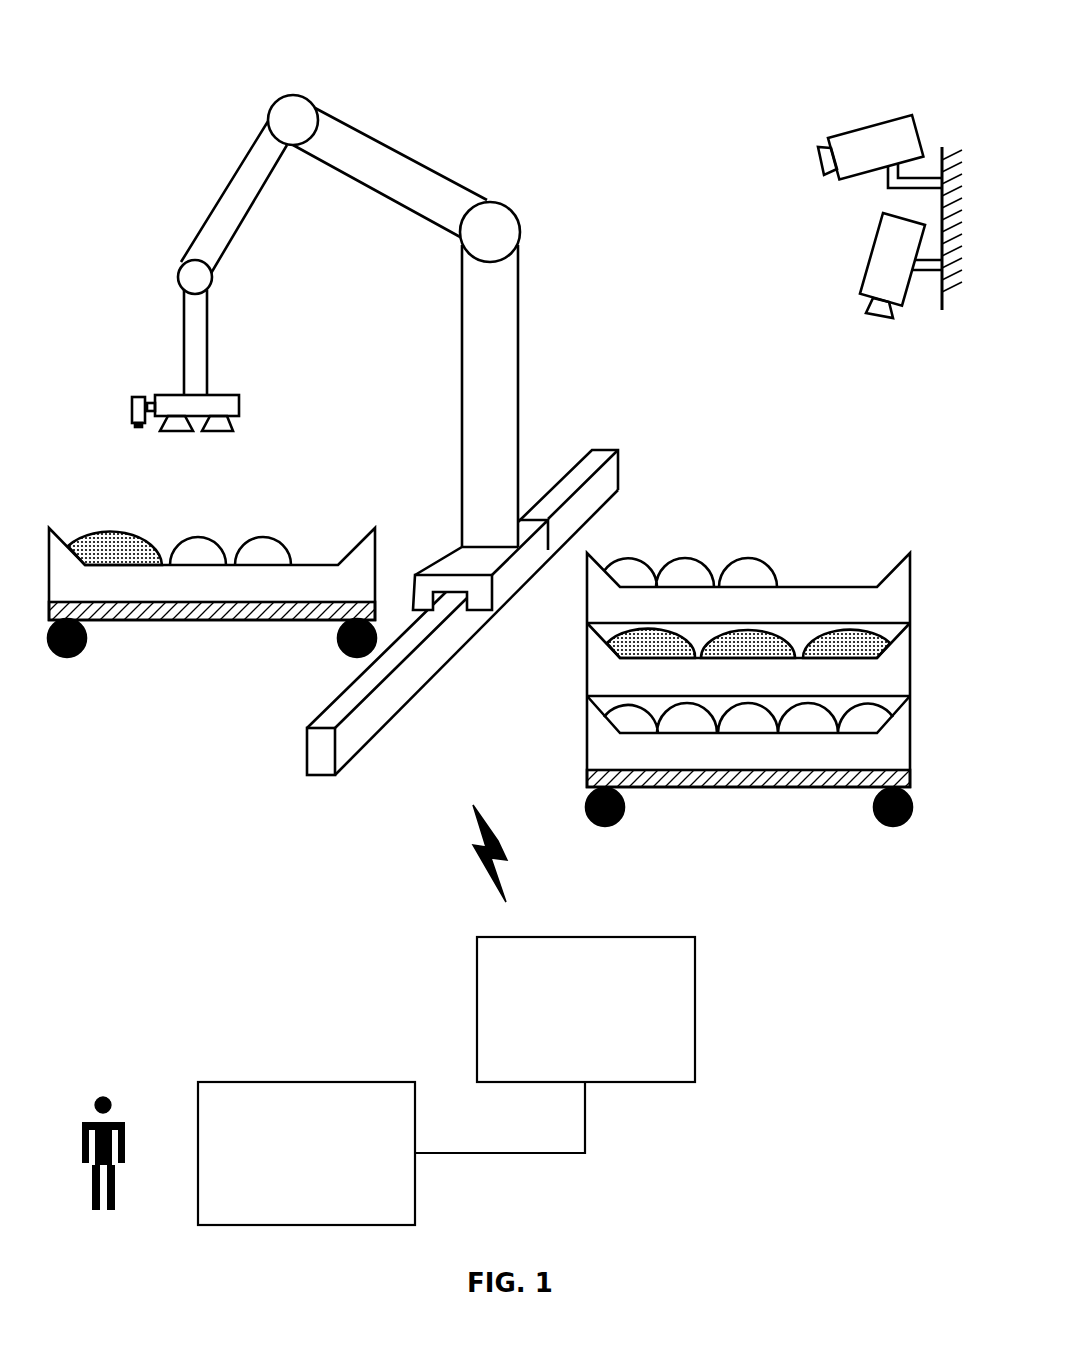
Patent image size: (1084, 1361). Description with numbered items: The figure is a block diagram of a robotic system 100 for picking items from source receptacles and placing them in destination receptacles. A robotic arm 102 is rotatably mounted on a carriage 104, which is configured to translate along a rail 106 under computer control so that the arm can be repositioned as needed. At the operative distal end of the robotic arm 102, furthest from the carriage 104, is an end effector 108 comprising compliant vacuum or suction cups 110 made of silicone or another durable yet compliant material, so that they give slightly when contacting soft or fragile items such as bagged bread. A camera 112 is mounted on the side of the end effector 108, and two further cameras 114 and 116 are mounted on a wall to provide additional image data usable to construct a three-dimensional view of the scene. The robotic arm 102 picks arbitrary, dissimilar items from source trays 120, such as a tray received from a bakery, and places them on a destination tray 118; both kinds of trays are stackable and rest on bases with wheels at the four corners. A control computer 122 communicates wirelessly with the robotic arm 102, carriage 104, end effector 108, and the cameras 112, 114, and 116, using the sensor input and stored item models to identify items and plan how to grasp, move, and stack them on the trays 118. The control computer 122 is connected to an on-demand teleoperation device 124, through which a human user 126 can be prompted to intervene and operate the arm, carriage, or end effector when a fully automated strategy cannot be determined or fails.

The robotic system 100 is at (160, 57).
The robotic arm 102 is at (518, 397).
The carriage 104 is at (438, 560).
The rail 106 is at (618, 470).
The end effector 108 is at (239, 403).
The suction cups 110 is at (230, 422).
The camera 112 is at (132, 407).
The camera 114 is at (852, 132).
The camera 116 is at (868, 268).
The destination tray 118 is at (215, 620).
The source tray 120 is at (740, 787).
The control computer 122 is at (695, 993).
The teleoperation device 124 is at (285, 1082).
The human user 126 is at (103, 1092).